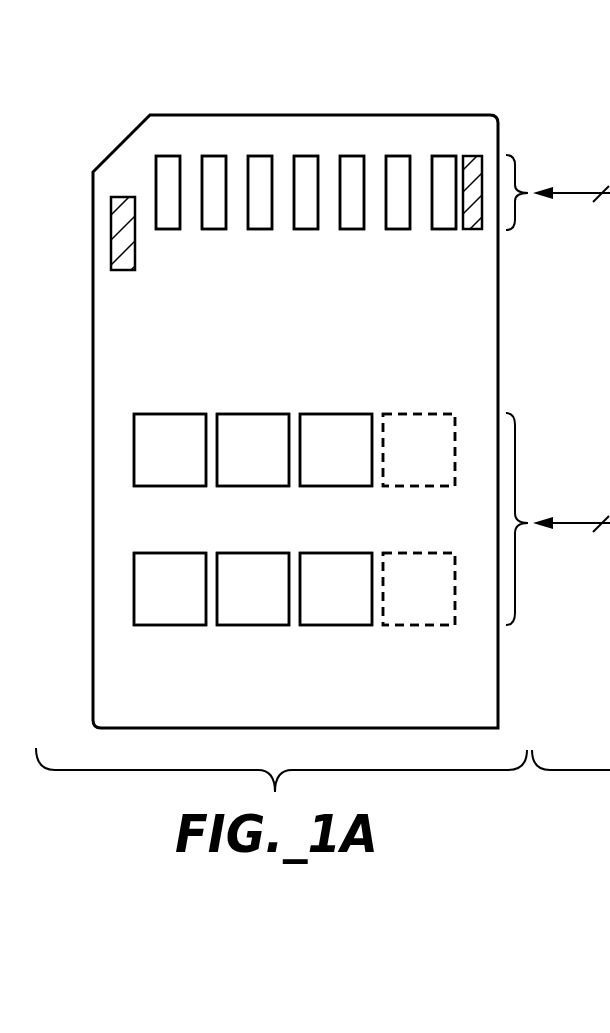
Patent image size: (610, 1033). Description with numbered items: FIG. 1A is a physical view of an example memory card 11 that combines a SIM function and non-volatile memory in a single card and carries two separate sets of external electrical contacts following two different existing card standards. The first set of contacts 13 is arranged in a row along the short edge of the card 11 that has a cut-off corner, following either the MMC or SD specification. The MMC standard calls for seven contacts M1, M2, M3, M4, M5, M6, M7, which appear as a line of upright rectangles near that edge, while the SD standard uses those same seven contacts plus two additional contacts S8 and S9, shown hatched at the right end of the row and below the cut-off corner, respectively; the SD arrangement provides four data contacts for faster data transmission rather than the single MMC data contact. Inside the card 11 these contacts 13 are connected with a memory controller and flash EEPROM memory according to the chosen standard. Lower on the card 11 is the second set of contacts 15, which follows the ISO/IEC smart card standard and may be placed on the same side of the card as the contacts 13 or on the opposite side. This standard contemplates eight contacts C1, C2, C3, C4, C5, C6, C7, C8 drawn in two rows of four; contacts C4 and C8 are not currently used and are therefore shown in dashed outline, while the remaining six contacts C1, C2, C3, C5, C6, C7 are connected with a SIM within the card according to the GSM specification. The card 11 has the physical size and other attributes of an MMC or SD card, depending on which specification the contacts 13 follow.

The memory card 11 is at (498, 669).
The set of electrical contacts 13 is at (332, 150).
The set of contacts 15 is at (148, 527).
The additional contact S8 is at (472, 182).
The additional contact S9 is at (123, 247).
The contact M1 is at (168, 210).
The contact M2 is at (214, 210).
The contact M3 is at (260, 210).
The contact M4 is at (306, 210).
The contact M5 is at (352, 210).
The contact M6 is at (398, 210).
The contact M7 is at (444, 210).
The contact C1 is at (170, 589).
The contact C2 is at (253, 589).
The contact C3 is at (336, 589).
The contact C4 is at (419, 589).
The contact C5 is at (170, 450).
The contact C6 is at (253, 450).
The contact C7 is at (336, 450).
The contact C8 is at (419, 450).